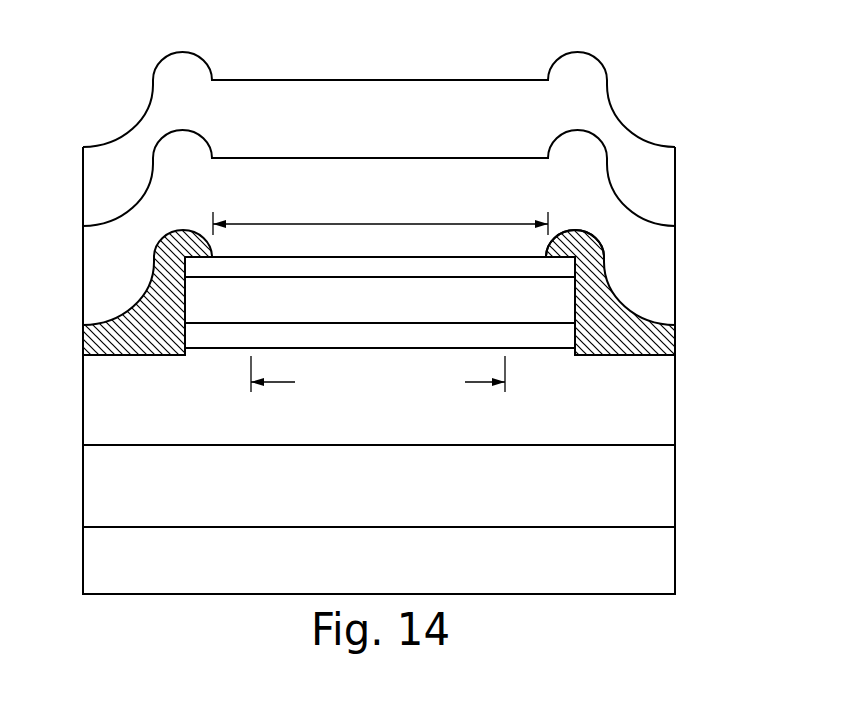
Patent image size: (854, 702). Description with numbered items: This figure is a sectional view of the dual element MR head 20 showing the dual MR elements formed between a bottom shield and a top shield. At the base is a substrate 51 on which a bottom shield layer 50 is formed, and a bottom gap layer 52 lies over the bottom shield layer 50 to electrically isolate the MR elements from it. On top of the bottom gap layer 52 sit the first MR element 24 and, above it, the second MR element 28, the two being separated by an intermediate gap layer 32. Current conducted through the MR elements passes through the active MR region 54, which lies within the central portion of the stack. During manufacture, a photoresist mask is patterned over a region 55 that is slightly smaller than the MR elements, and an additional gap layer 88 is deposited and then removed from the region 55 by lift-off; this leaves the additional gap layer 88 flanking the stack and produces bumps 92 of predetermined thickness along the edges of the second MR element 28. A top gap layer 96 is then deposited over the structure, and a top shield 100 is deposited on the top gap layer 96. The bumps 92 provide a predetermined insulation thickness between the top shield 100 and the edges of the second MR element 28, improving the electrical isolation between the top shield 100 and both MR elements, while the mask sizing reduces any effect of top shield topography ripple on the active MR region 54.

The dual element MR head 20 is at (121, 103).
The top shield 100 is at (660, 177).
The top gap layer 96 is at (662, 278).
The additional gap layer 88 is at (107, 343).
The bumps 92 is at (575, 218).
The second MR element 28 is at (518, 267).
The intermediate gap layer 32 is at (521, 315).
The first MR element 24 is at (533, 337).
The region 55 is at (318, 223).
The active MR region 54 is at (484, 388).
The bottom gap layer 52 is at (655, 403).
The bottom shield layer 50 is at (650, 494).
The substrate 51 is at (660, 566).